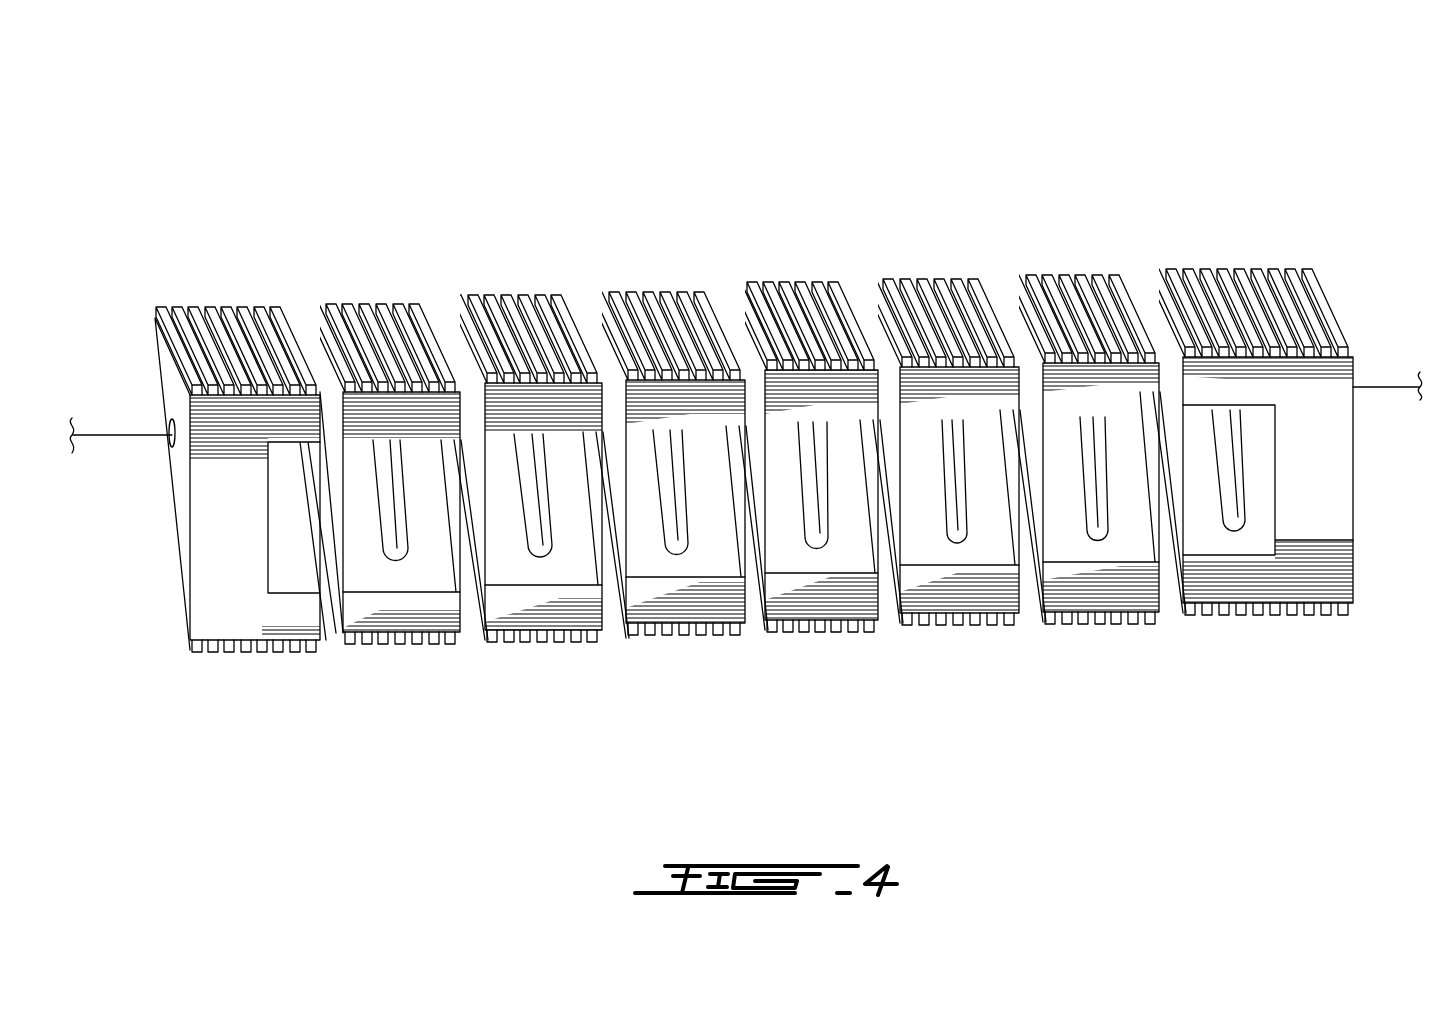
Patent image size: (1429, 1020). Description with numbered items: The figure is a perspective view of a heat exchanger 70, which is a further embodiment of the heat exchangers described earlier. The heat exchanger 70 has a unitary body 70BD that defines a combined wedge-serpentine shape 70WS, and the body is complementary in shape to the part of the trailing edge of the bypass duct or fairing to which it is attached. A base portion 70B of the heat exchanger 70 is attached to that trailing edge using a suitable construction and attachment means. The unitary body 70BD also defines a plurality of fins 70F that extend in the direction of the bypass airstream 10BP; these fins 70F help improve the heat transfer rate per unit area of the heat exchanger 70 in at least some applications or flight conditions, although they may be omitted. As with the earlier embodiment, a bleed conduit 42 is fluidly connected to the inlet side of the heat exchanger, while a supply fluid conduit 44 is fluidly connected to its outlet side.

The heat exchanger 70 is at (784, 422).
The fins 70F is at (320, 315).
The unitary body 70BD is at (607, 300).
The combined wedge-serpentine shape 70WS is at (1352, 299).
The base portion 70B is at (415, 620).
The bypass airstream 10BP is at (758, 660).
The bleed conduit 42 is at (1385, 392).
The supply fluid conduit 44 is at (120, 437).